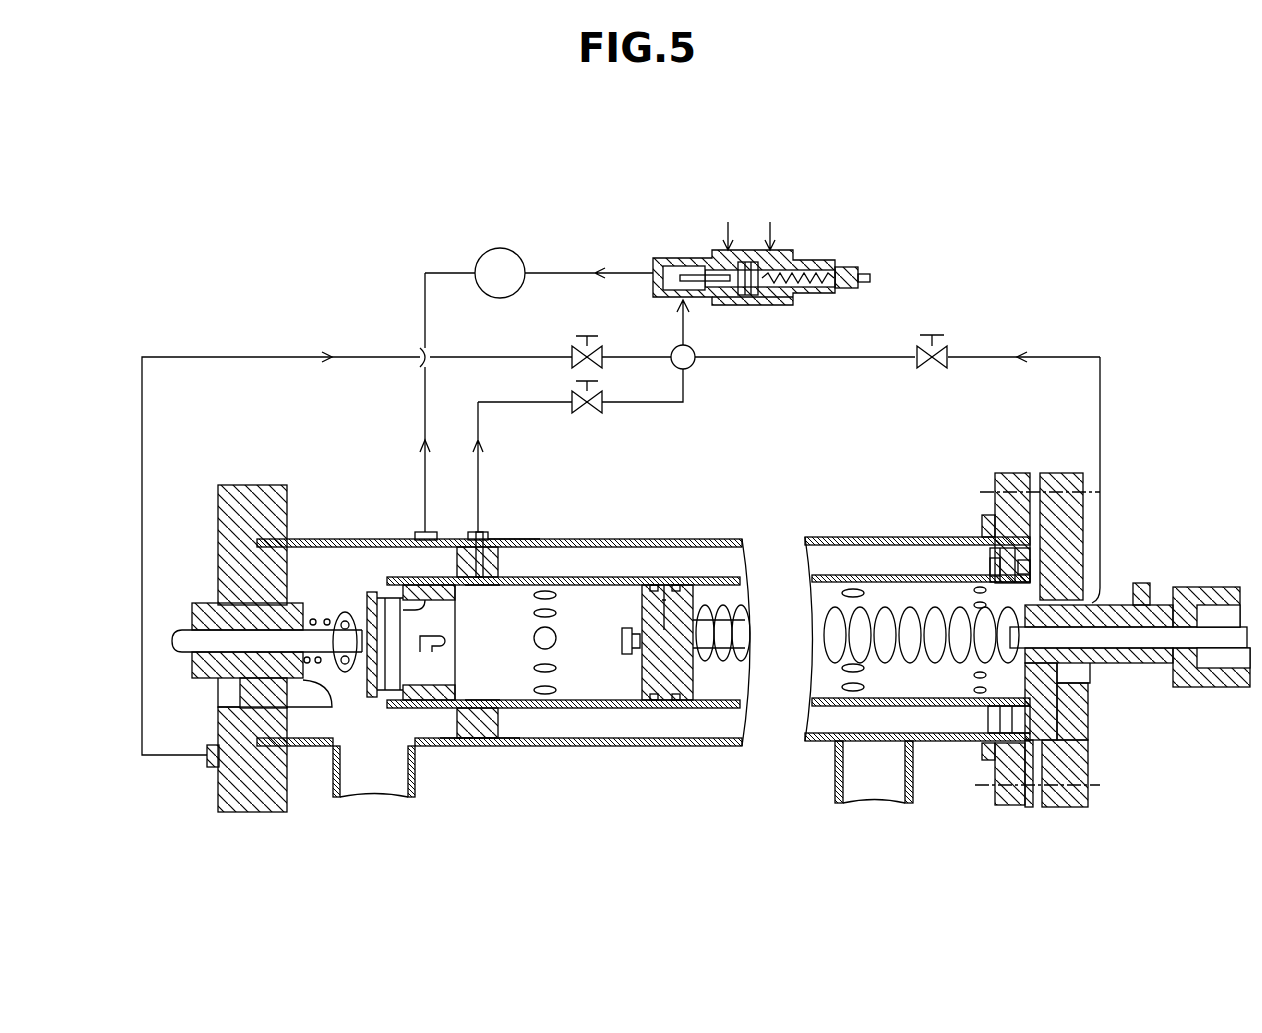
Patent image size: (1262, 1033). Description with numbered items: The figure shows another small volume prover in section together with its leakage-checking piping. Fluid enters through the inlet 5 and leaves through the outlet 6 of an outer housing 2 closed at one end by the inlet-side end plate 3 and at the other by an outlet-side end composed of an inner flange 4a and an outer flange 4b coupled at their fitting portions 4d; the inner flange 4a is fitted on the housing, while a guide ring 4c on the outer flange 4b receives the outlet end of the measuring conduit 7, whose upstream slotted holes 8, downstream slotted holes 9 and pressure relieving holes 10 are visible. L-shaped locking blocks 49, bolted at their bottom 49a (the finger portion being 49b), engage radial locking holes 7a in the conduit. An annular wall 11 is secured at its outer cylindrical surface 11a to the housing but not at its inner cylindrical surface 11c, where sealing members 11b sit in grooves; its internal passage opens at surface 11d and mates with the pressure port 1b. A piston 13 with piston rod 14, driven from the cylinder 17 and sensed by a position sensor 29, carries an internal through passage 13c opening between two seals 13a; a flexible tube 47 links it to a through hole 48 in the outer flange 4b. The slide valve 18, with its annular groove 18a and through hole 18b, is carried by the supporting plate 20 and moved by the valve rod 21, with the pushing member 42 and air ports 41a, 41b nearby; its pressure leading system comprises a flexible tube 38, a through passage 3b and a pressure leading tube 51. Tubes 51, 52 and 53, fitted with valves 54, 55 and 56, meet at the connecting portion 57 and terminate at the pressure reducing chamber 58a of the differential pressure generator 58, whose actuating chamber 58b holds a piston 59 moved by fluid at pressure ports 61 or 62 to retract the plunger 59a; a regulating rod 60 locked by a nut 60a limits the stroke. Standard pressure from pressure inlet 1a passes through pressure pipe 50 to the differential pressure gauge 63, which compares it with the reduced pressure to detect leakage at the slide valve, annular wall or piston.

The pressure inlet 1a is at (416, 532).
The pressure port of an annular passage 1b is at (484, 532).
The outer housing 2 is at (655, 538).
The inlet-side end plate 3 is at (253, 484).
The through passage 3b is at (207, 765).
The inner flange 4a is at (1010, 472).
The outer flange 4b is at (1060, 472).
The guide ring 4c is at (1042, 690).
The fitting portions 4d is at (1035, 735).
The inlet 5 is at (372, 796).
The outlet 6 is at (880, 796).
The measuring conduit 7 is at (722, 576).
The locking holes 7a is at (992, 718).
The upstream slotted holes 8 is at (553, 643).
The downstream slotted holes 9 is at (842, 687).
The pressure relieving holes 10 is at (974, 677).
The annular wall 11 is at (473, 747).
The outer cylindrical surface 11a is at (492, 740).
The sealing members 11b is at (490, 575).
The inner cylindrical surface 11c is at (480, 705).
The outer cylindrical surface 11d is at (500, 538).
The piston 13 is at (655, 668).
The seals 13a is at (676, 708).
The internal through passage 13c is at (650, 603).
The piston rod 14 is at (823, 640).
The cylinder 17 is at (1205, 587).
The slide valve 18 is at (458, 690).
The annular groove 18a is at (430, 700).
The through hole 18b is at (455, 606).
The supporting plate 20 is at (370, 592).
The valve rod 21 is at (183, 630).
The position sensor 29 is at (1143, 583).
The flexible tube 38 is at (330, 700).
The air port 41a is at (218, 688).
The air port 41b is at (1092, 680).
The pushing member 42 is at (440, 636).
The flexible tube 47 is at (740, 665).
The through hole 48 is at (1088, 555).
The locking device 49 is at (995, 552).
The bottom 49a is at (1020, 560).
The seal part 49b is at (992, 568).
The pressure pipe 50 is at (422, 298).
The pressure leading tube 51 is at (142, 410).
The pressure leading tube 52 is at (480, 424).
The pressure leading tube 53 is at (1066, 355).
The valve 54 is at (578, 345).
The valve 55 is at (578, 391).
The valve 56 is at (945, 346).
The connecting portion 57 is at (692, 366).
The differential pressure generator 58 is at (818, 245).
The pressure reducing chamber 58a is at (668, 272).
The actuating chamber 58b is at (740, 302).
The piston 59 is at (775, 300).
The plunger 59a is at (695, 283).
The regulating rod 60 is at (880, 279).
The nut 60a is at (850, 290).
The pressure port 61 is at (727, 223).
The pressure port 62 is at (769, 222).
The differential pressure gauge 63 is at (500, 248).